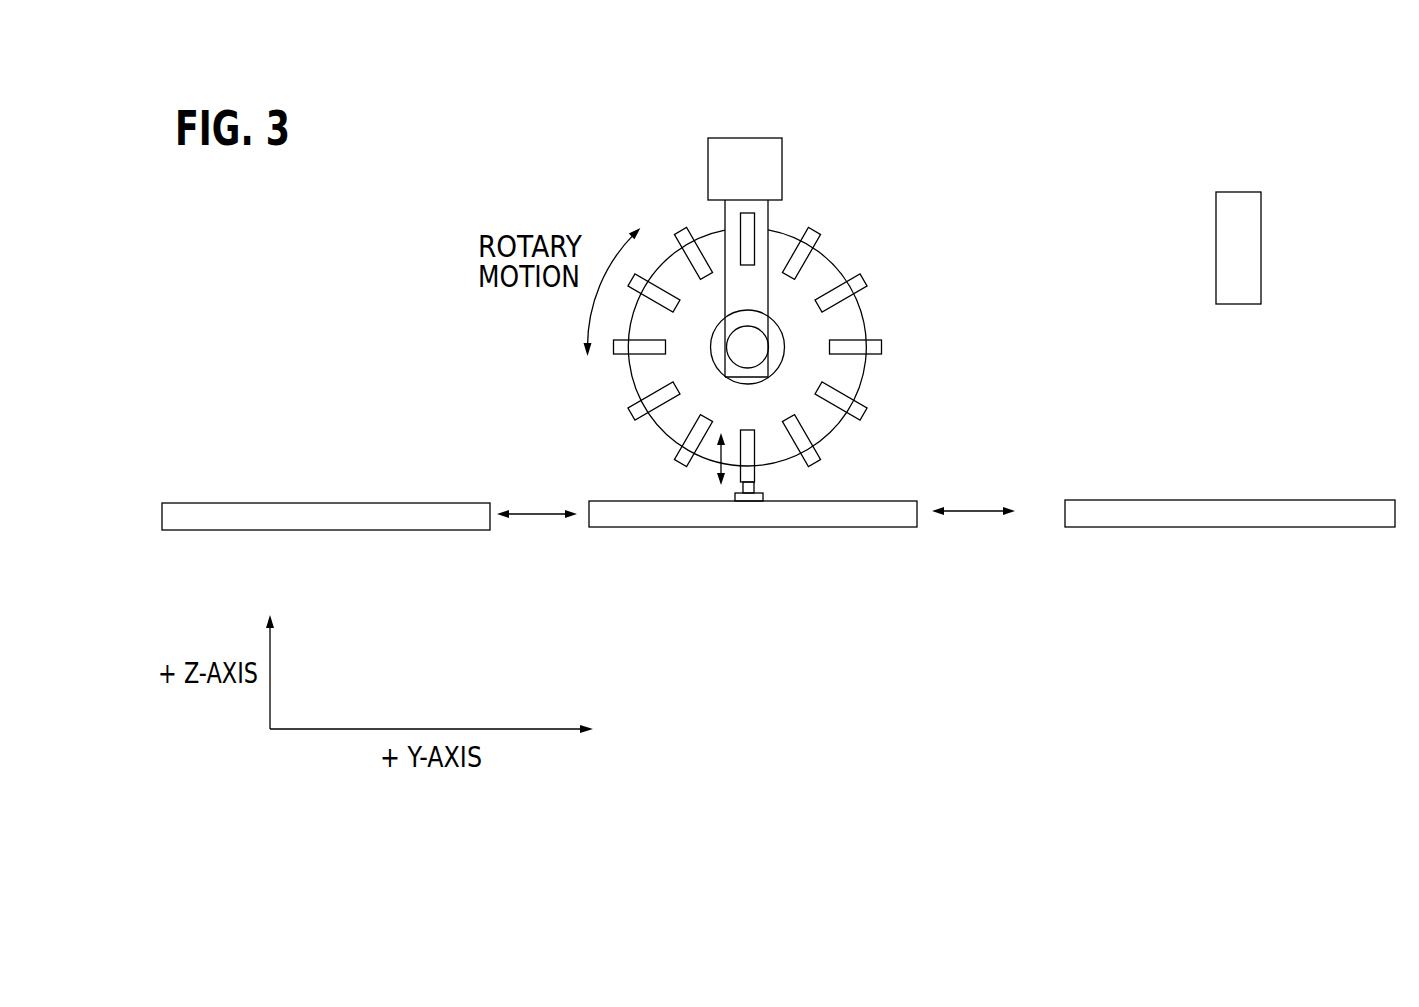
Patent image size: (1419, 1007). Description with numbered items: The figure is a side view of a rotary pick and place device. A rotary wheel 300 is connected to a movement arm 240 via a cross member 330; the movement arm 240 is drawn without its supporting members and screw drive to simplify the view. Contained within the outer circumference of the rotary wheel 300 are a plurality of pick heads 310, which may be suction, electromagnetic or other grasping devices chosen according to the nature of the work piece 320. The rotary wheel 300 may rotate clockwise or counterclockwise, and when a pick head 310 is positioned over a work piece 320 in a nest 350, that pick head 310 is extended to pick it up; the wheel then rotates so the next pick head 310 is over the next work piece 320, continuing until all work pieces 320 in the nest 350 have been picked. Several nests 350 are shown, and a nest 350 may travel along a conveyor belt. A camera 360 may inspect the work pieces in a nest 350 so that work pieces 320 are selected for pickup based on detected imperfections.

The movement arm 240 is at (737, 138).
The rotary wheel 300 is at (863, 309).
The pick head 310 is at (887, 342).
The work piece 320 is at (770, 490).
The cross member 330 is at (725, 230).
The nest 350 is at (258, 503).
The camera 360 is at (1268, 248).